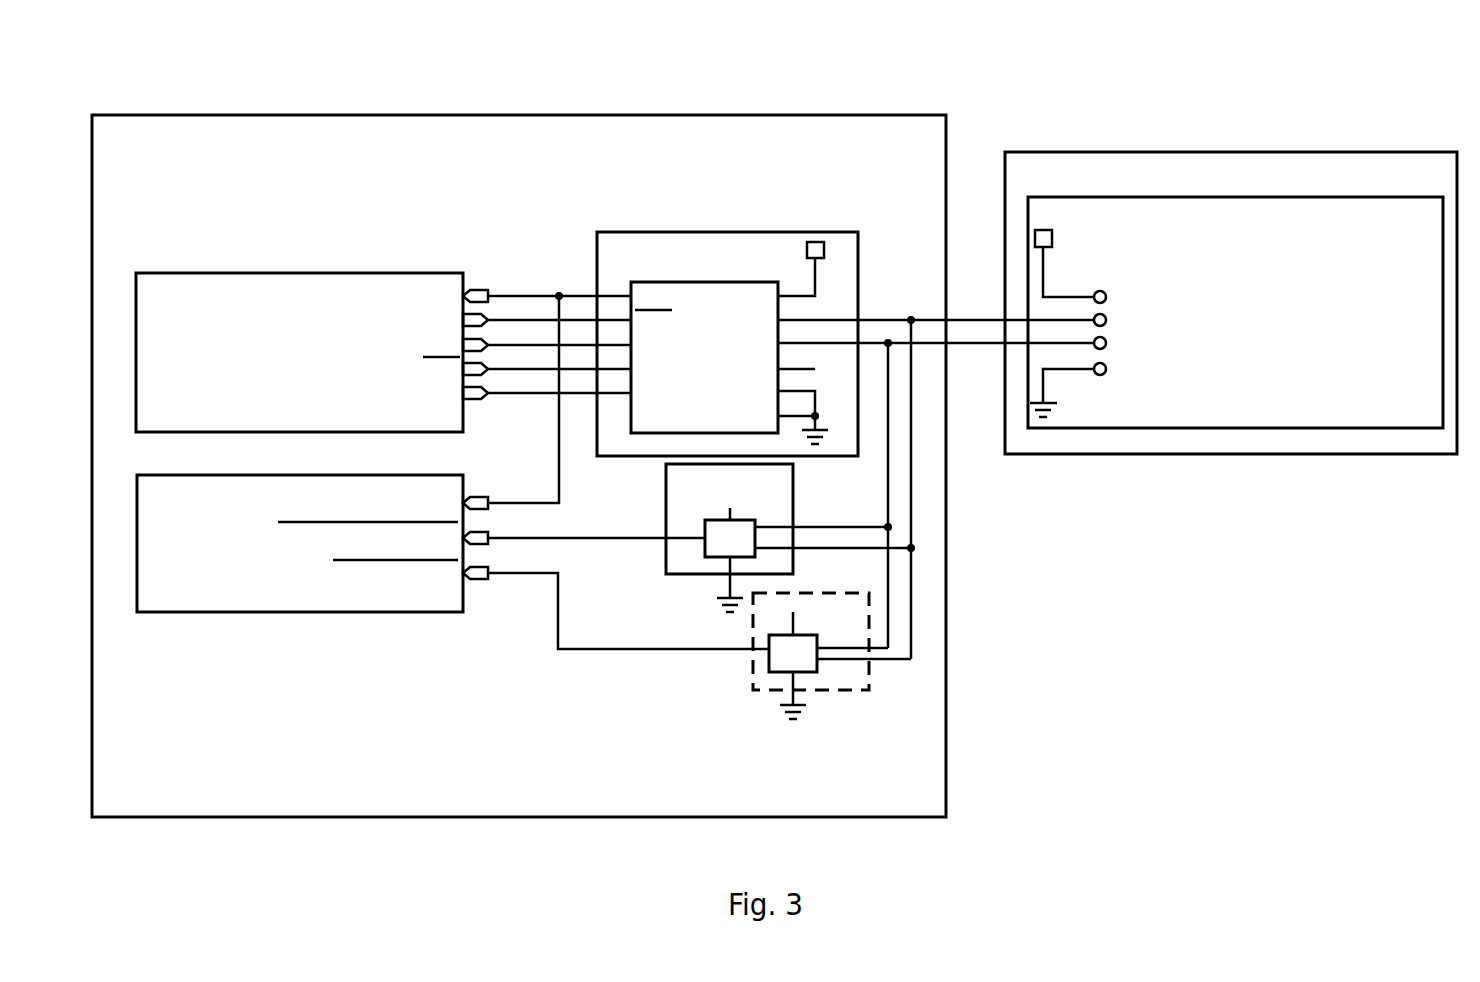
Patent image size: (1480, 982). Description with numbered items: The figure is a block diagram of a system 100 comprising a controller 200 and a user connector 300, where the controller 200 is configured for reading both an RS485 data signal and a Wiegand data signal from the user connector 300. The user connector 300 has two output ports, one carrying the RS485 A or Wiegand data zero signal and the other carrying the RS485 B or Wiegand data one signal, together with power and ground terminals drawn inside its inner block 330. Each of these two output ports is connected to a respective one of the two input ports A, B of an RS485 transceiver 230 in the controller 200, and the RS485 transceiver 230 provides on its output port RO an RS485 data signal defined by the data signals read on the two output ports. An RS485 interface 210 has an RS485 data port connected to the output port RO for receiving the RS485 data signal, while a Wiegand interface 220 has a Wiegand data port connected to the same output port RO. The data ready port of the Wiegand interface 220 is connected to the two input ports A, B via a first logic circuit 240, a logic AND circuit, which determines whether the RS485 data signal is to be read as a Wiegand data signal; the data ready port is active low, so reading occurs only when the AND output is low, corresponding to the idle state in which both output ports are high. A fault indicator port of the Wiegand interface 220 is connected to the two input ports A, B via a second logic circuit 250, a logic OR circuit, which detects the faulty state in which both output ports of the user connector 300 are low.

The system 100 is at (956, 57).
The controller 200 is at (162, 156).
The RS485 interface 210 is at (188, 310).
The Wiegand interface 220 is at (188, 507).
The RS485 transceiver 230 is at (750, 269).
The first logic circuit 240 is at (752, 501).
The second logic circuit 250 is at (862, 631).
The user connector 300 is at (1447, 184).
The controller interface connector 330 is at (1433, 234).